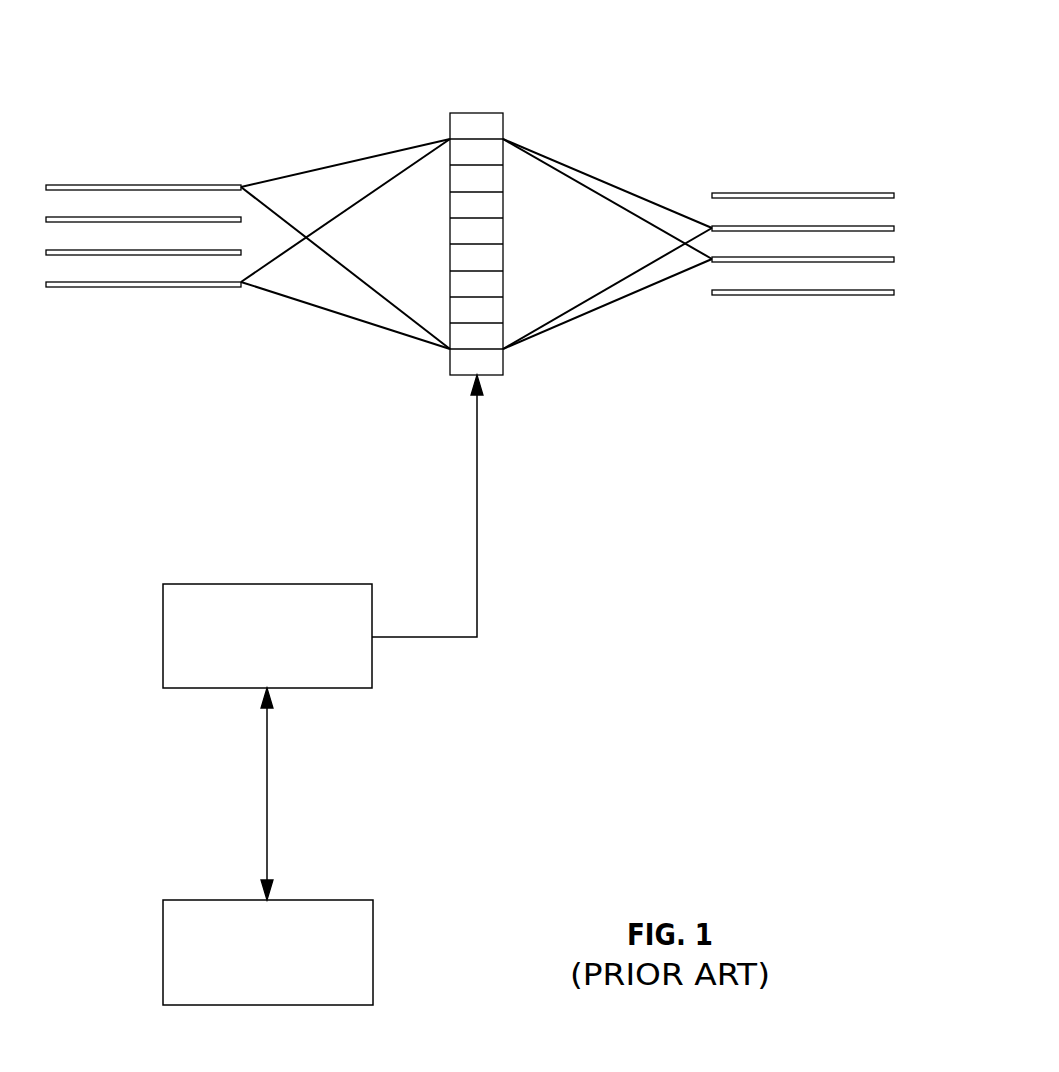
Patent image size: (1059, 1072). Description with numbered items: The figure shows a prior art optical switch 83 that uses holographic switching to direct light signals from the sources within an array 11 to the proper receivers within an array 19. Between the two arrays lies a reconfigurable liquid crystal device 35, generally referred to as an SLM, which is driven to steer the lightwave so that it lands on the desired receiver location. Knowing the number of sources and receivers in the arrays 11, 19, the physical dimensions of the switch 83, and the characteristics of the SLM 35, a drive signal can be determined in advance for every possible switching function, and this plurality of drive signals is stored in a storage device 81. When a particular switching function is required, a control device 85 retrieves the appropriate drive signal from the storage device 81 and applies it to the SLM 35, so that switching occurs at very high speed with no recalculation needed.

The array of sources 11 is at (172, 187).
The array of receivers 19 is at (803, 193).
The reconfigurable liquid crystal device 35 is at (477, 113).
The switch 83 is at (638, 88).
The control device 85 is at (293, 584).
The storage device 81 is at (310, 900).